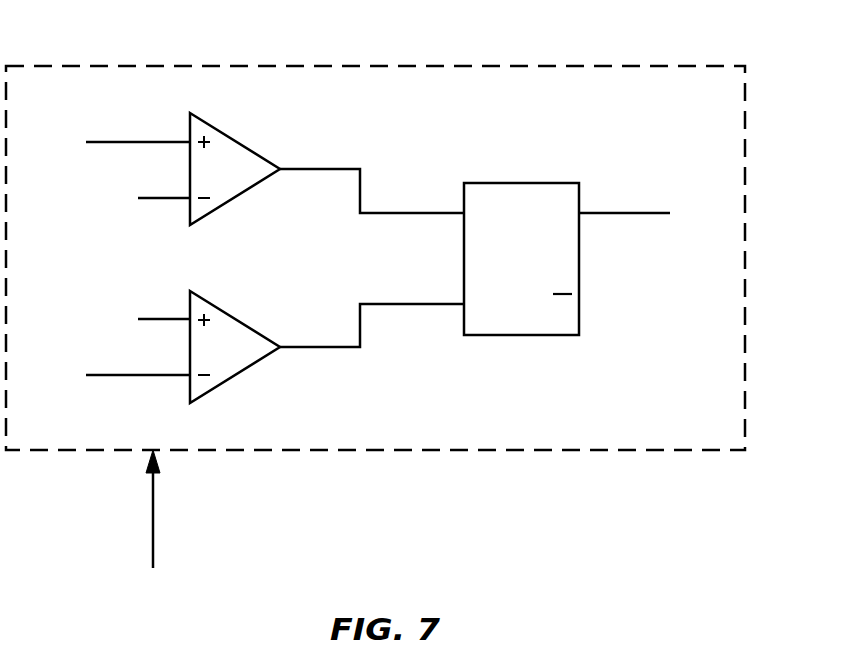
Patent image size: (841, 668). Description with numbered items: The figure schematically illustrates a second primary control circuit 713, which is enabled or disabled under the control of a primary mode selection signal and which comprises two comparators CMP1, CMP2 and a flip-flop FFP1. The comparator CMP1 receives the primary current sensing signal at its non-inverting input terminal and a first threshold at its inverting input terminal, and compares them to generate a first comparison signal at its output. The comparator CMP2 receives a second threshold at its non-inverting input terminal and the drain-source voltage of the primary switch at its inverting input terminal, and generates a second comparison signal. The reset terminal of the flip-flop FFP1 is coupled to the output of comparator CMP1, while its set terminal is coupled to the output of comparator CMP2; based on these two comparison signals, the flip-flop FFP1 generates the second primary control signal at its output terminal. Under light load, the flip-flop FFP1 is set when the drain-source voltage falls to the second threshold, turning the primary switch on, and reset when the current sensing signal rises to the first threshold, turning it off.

The second primary control circuit 713 is at (689, 66).
The comparator CMP1 is at (235, 169).
The comparator CMP2 is at (235, 347).
The flip-flop FFP1 is at (521, 246).